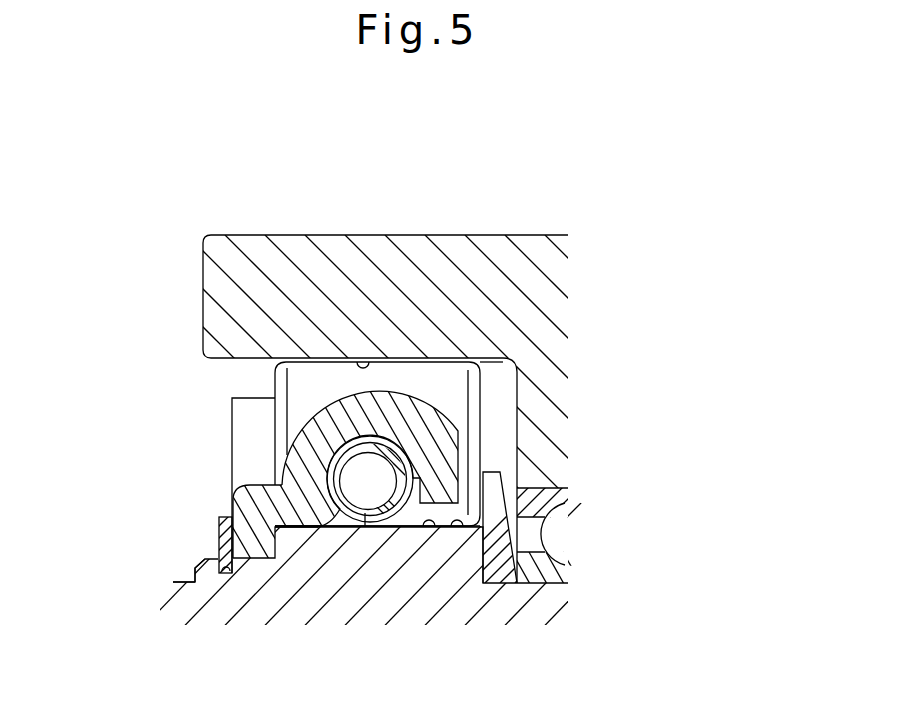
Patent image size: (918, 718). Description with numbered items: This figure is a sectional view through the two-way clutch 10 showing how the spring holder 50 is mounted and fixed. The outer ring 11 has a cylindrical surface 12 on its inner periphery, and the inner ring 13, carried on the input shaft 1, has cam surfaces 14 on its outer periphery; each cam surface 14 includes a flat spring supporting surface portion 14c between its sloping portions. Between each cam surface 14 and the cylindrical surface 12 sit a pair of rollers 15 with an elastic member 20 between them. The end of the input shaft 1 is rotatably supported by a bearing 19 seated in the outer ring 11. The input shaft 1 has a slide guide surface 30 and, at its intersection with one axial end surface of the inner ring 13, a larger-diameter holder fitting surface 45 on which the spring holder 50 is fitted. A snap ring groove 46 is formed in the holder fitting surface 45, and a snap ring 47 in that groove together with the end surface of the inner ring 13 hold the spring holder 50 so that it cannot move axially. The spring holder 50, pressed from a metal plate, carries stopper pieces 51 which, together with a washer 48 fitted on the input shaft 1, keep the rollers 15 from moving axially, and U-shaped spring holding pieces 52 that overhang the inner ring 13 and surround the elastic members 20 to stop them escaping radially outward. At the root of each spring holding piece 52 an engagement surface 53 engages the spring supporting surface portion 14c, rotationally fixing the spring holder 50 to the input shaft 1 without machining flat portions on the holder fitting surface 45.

The input shaft 1 is at (182, 602).
The two-way clutch 10 is at (230, 232).
The outer ring 11 is at (298, 250).
The cylindrical surface 12 is at (370, 359).
The inner ring 13 is at (402, 537).
The cam surface 14 is at (443, 528).
The spring supporting surface portion 14c is at (470, 533).
The rollers 15 is at (420, 368).
The bearing 19 is at (563, 538).
The elastic member 20 is at (360, 528).
The slide guide surface 30 is at (181, 580).
The holder fitting surface 45 is at (208, 553).
The snap ring groove 46 is at (233, 550).
The snap ring 47 is at (227, 540).
The washer 48 is at (553, 565).
The spring holder 50 is at (235, 507).
The stopper pieces 51 is at (240, 420).
The spring holding pieces 52 is at (453, 420).
The engagement surface 53 is at (292, 528).